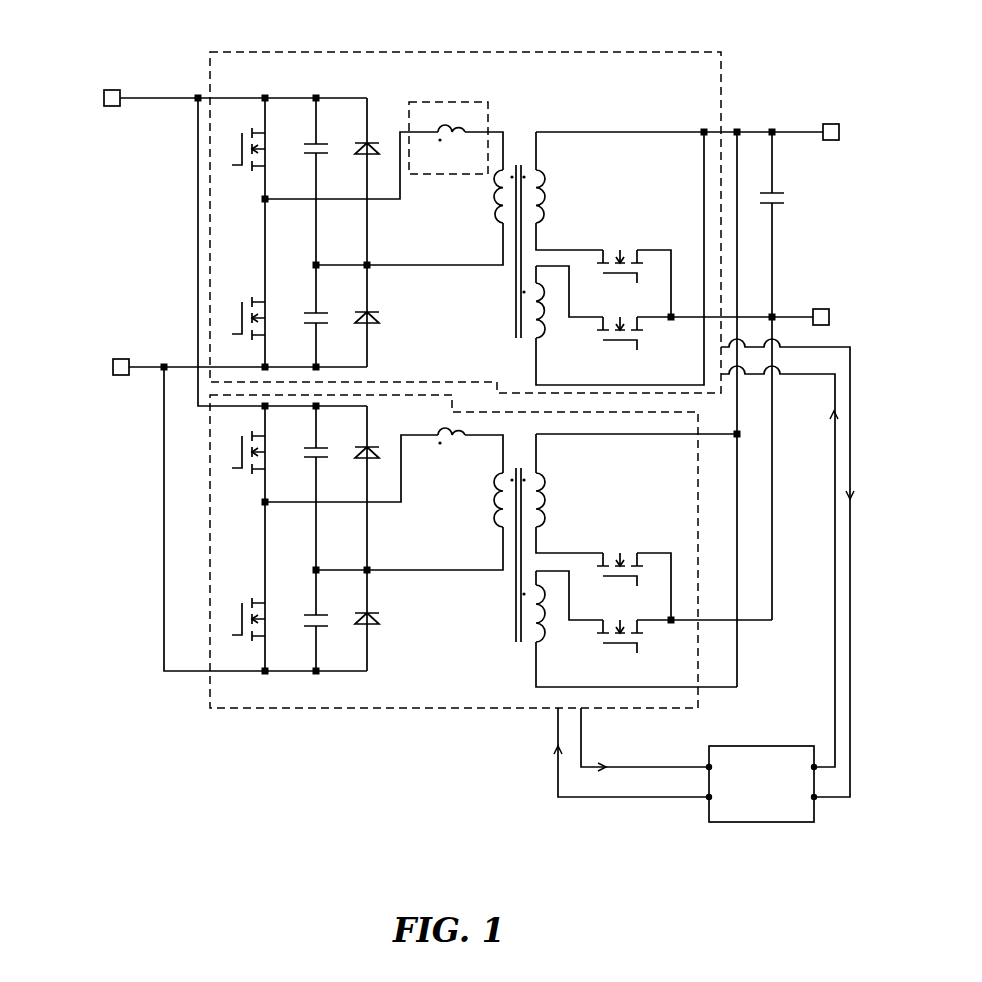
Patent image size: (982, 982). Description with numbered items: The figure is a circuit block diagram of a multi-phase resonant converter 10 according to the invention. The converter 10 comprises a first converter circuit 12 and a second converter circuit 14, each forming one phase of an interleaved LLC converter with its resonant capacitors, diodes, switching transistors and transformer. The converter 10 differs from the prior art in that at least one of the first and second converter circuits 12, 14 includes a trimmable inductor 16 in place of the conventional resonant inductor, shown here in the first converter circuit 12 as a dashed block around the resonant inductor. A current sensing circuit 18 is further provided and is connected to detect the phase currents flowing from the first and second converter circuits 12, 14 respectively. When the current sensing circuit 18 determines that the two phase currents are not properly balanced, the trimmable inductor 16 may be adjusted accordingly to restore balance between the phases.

The multi-phase resonant converter 10 is at (465, 442).
The first converter circuit 12 is at (338, 51).
The second converter circuit 14 is at (358, 709).
The trimmable inductor 16 is at (451, 101).
The current sensing circuit 18 is at (757, 823).